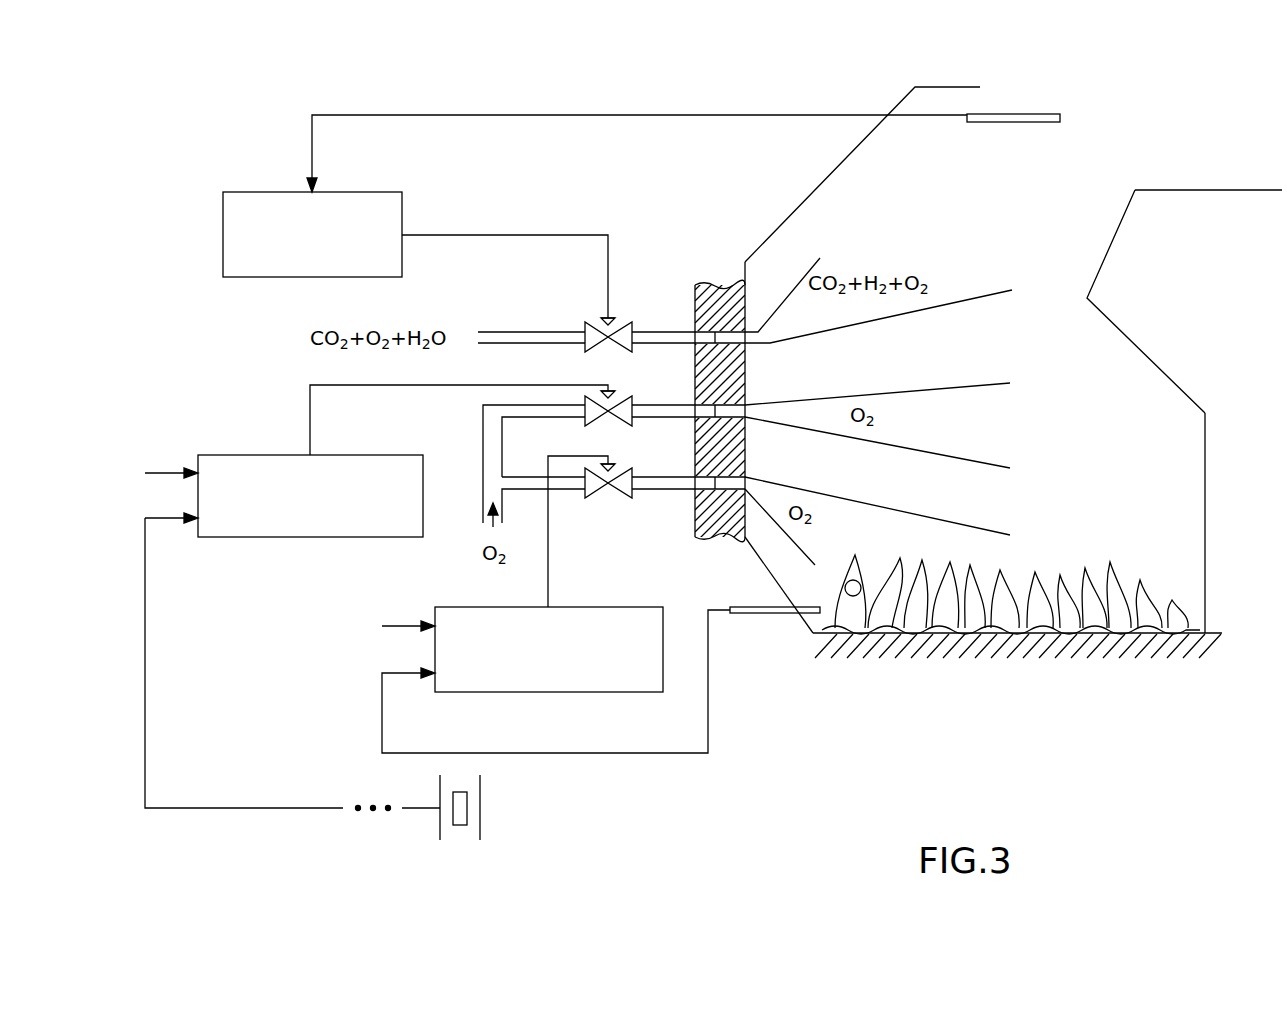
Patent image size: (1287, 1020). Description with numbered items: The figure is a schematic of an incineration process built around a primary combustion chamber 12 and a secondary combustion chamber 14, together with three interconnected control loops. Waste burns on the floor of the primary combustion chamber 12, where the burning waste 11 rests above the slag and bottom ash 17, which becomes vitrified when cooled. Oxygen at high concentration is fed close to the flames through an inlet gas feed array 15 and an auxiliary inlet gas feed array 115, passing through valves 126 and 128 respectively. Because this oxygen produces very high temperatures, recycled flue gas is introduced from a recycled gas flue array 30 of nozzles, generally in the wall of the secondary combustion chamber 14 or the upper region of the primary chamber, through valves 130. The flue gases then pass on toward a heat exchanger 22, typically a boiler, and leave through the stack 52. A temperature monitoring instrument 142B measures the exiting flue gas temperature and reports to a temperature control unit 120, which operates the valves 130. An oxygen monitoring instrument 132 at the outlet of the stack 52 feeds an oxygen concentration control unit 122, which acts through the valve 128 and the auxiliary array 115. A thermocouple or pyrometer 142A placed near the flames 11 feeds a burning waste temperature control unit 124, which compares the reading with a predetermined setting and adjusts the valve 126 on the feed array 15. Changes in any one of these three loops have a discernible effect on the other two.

The burning waste 11 is at (1148, 620).
The primary combustion chamber 12 is at (1163, 440).
The secondary combustion chamber 14 is at (1052, 242).
The inlet gas feed array 15 is at (663, 493).
The bottom ash 17 is at (1168, 635).
The heat exchanger 22 is at (1158, 165).
The recycled gas flue array 30 is at (663, 347).
The stack 52 is at (452, 840).
The auxiliary inlet gas feed array 115 is at (662, 420).
The temperature control unit 120 is at (290, 192).
The oxygen concentration control unit 122 is at (283, 455).
The burning waste temperature control unit 124 is at (520, 607).
The valve 126 is at (621, 498).
The valve 128 is at (622, 426).
The valve 130 is at (622, 352).
The oxygen monitoring instrument 132 is at (467, 808).
The thermocouple or pyrometer 142A is at (772, 615).
The temperature monitoring instrument 142B is at (1005, 114).